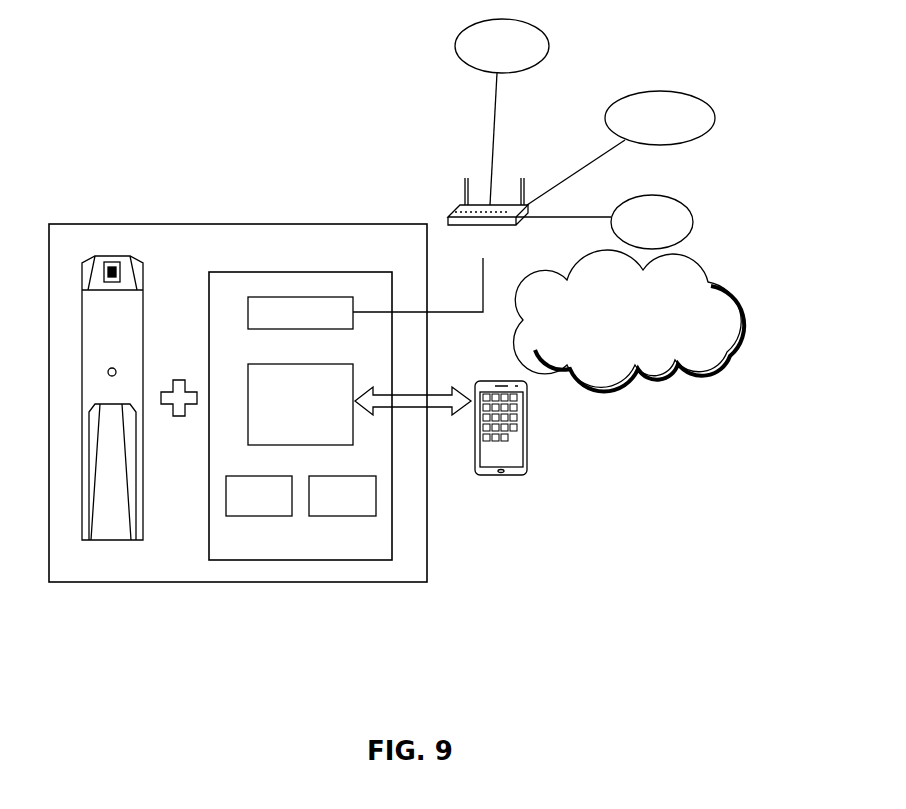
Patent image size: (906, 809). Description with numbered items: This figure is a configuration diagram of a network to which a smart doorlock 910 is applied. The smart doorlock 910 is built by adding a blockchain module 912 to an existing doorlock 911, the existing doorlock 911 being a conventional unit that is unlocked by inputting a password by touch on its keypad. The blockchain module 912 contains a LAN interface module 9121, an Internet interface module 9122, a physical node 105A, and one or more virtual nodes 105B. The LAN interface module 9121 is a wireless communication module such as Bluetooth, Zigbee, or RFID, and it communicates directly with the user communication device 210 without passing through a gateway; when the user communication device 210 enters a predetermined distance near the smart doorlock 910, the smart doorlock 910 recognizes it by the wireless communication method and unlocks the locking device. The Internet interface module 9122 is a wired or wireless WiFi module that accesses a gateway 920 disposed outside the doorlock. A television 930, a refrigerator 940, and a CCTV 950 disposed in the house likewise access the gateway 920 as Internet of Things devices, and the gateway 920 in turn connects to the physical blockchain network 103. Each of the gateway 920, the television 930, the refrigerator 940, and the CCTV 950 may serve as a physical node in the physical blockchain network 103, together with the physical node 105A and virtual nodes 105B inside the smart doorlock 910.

The smart doorlock 910 is at (281, 583).
The existing doorlock 911 is at (113, 255).
The blockchain module 912 is at (341, 272).
The LAN interface module 9121 is at (353, 437).
The Internet interface module 9122 is at (294, 297).
The physical node 105A is at (259, 496).
The virtual node 105B is at (342, 496).
The gateway 920 is at (478, 202).
The television 930 is at (549, 46).
The refrigerator 940 is at (715, 118).
The CCTV 950 is at (693, 222).
The physical blockchain network 103 is at (626, 330).
The user communication device 210 is at (521, 428).